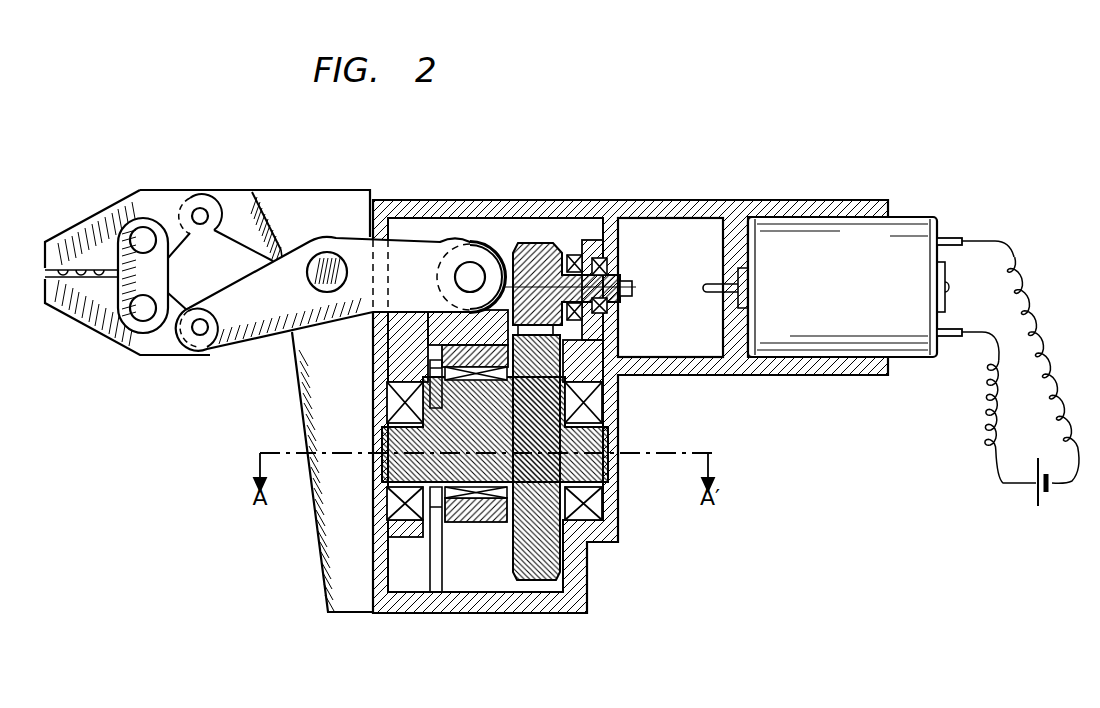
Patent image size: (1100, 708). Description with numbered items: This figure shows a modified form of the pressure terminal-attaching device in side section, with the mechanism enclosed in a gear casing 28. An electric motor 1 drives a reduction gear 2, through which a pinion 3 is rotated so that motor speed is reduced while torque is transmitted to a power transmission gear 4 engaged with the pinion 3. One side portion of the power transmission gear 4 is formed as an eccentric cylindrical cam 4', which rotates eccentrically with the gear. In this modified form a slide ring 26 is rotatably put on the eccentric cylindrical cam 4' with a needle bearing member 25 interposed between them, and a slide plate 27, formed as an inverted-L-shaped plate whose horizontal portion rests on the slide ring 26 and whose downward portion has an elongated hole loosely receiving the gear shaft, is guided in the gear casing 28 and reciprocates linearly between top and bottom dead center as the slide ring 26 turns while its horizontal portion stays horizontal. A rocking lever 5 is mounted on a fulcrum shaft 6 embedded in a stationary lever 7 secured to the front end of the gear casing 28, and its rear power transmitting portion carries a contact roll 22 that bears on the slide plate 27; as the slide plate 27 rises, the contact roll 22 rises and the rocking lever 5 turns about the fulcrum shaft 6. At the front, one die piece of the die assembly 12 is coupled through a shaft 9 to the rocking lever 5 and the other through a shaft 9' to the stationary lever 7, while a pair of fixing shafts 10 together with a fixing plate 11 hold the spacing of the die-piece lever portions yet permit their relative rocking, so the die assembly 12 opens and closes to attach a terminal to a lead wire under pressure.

The electric motor 1 is at (827, 255).
The reduction gear 2 is at (663, 262).
The pinion 3 is at (547, 257).
The power transmission gear 4 is at (536, 494).
The eccentric cylindrical cam 4' is at (432, 429).
The rocking lever 5 is at (352, 243).
The fulcrum shaft 6 is at (327, 255).
The stationary lever 7 is at (280, 202).
The shaft 9 is at (199, 350).
The shaft 9' is at (200, 188).
The fixing shafts 10 is at (142, 238).
The fixing plate 11 is at (118, 245).
The die assembly 12 is at (93, 215).
The contact roll 22 is at (473, 243).
The needle bearing member 25 is at (458, 493).
The slide ring 26 is at (493, 512).
The slide plate 27 is at (497, 322).
The housing 28 is at (410, 607).